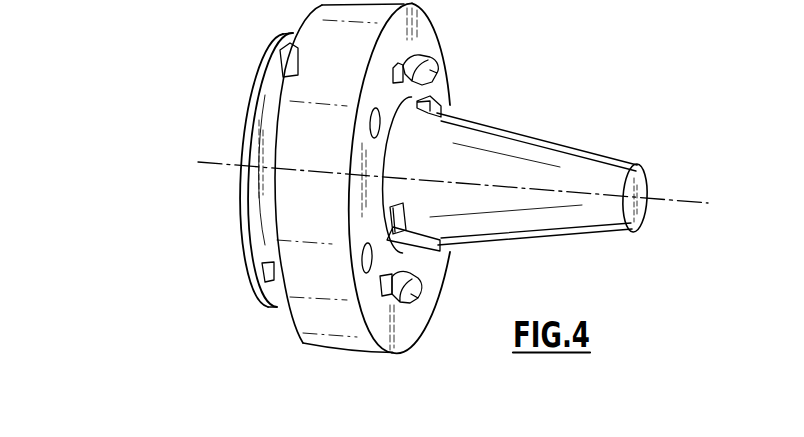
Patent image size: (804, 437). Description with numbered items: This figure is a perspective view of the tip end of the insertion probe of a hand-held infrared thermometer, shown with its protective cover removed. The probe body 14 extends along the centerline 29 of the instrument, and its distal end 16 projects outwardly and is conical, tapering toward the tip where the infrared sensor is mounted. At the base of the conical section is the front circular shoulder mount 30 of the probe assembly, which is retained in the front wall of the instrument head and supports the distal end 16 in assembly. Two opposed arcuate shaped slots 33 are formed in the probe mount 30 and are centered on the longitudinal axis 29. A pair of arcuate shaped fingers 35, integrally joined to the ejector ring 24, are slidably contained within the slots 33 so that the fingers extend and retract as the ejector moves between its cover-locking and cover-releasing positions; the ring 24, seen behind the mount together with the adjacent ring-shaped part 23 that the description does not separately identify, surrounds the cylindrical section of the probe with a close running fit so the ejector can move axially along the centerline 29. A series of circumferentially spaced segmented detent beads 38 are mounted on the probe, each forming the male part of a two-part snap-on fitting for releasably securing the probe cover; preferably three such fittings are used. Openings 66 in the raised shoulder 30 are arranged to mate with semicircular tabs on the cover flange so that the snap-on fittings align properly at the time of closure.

The nozzle 14 is at (515, 125).
The distal end 16 is at (573, 158).
The flange 23 is at (253, 64).
The circular ring 24 is at (239, 200).
The centerline 29 is at (686, 203).
The front circular shoulder mount 30 is at (340, 348).
The arcuate shaped slots 33 is at (393, 73).
The arcuate shaped fingers 35 is at (428, 64).
The segmented detent beads 38 is at (443, 98).
The openings 66 is at (365, 245).